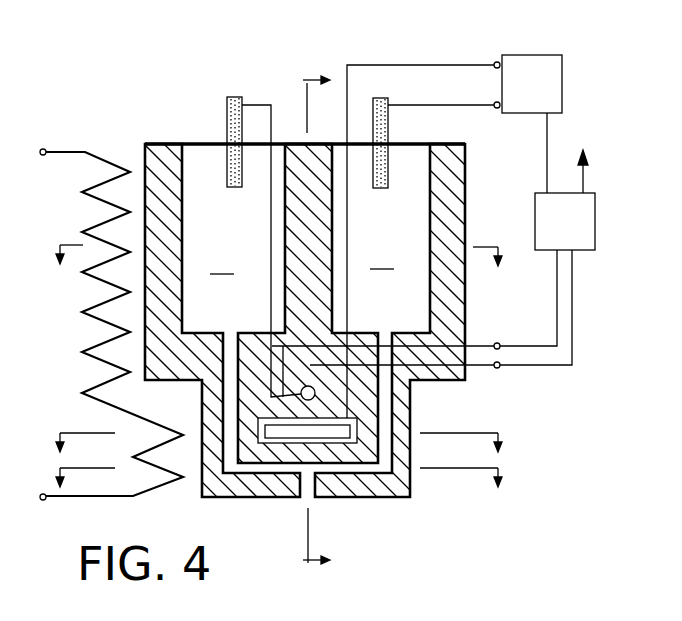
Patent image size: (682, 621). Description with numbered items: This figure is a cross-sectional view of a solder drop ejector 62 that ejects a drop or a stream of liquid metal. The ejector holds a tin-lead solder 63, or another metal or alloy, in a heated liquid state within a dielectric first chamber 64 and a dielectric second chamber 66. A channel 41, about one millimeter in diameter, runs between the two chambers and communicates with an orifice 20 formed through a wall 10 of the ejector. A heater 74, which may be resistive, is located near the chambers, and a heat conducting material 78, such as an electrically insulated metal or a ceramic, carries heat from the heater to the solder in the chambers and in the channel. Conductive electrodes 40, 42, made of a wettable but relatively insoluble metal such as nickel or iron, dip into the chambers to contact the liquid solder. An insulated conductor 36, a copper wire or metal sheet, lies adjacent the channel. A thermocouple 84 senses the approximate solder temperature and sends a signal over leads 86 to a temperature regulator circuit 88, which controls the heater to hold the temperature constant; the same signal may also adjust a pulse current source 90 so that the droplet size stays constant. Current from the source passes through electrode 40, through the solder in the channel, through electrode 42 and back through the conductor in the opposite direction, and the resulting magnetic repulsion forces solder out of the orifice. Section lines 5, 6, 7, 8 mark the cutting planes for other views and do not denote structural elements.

The solder drop ejector 62 is at (158, 55).
The conductive electrode 42 is at (233, 97).
The dielectric second chamber 66 is at (208, 160).
The dielectric first chamber 64 is at (408, 165).
The conductive electrode 40 is at (383, 98).
The tin-lead solder 63 is at (301, 260).
The heat conducting material 78 is at (445, 208).
The pulse current source 90 is at (520, 99).
The temperature regulator circuit 88 is at (553, 237).
The heater 74 is at (102, 342).
The wall 10 is at (465, 275).
The leads 86 is at (470, 348).
The conductor 36 is at (343, 422).
The channel 41 is at (380, 470).
The thermocouple 84 is at (330, 475).
The orifice 20 is at (310, 488).
The section line 5- 5 is at (316, 326).
The section line 6- 6 is at (274, 252).
The section line 7- 7 is at (276, 439).
The section line 8- 8 is at (276, 473).